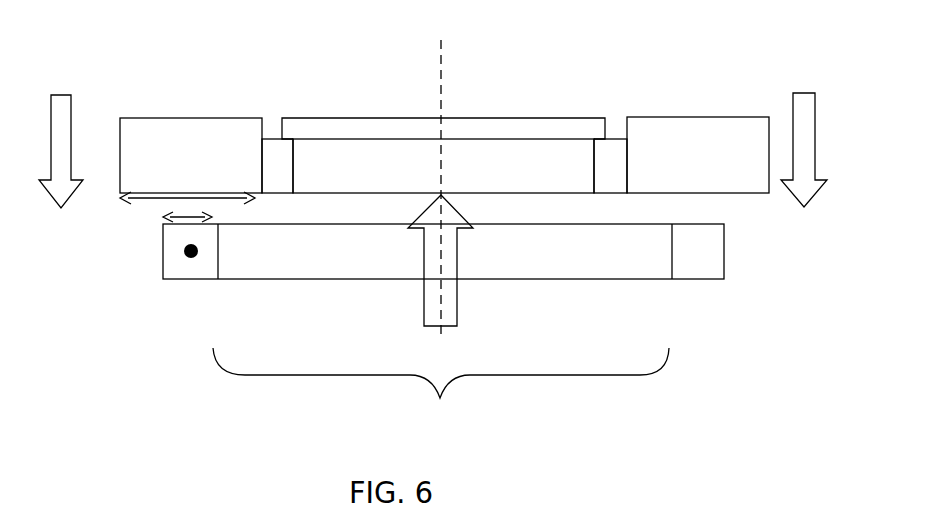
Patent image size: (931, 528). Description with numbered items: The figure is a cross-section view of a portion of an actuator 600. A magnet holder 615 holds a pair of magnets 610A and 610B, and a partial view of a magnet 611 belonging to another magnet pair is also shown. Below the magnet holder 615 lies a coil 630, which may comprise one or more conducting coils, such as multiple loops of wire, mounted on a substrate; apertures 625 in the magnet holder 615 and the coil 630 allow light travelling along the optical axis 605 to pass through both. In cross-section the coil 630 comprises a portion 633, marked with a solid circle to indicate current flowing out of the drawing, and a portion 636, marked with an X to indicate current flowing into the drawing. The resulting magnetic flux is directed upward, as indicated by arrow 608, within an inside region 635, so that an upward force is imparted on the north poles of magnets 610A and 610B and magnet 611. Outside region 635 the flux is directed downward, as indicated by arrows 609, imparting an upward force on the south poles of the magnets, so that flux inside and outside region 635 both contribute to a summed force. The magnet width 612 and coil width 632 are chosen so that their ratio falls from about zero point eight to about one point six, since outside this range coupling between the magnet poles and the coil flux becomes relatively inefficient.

The actuator 600 is at (89, 48).
The optical axis 605 is at (438, 55).
The arrow 608 is at (424, 310).
The arrows 609 is at (71, 104).
The magnet 610A is at (729, 154).
The magnet 610B is at (230, 154).
The magnet 611 is at (540, 118).
The magnet width 612 is at (153, 202).
The magnet holder 615 is at (270, 138).
The apertures 625 is at (380, 176).
The coil 630 is at (200, 281).
The coil width 632 is at (203, 207).
The portion 633 is at (163, 255).
The inside region 635 is at (441, 391).
The portion 636 is at (725, 253).